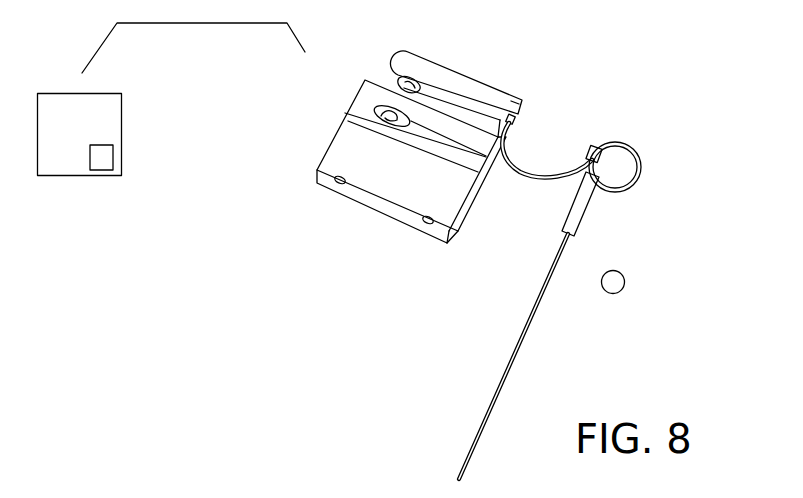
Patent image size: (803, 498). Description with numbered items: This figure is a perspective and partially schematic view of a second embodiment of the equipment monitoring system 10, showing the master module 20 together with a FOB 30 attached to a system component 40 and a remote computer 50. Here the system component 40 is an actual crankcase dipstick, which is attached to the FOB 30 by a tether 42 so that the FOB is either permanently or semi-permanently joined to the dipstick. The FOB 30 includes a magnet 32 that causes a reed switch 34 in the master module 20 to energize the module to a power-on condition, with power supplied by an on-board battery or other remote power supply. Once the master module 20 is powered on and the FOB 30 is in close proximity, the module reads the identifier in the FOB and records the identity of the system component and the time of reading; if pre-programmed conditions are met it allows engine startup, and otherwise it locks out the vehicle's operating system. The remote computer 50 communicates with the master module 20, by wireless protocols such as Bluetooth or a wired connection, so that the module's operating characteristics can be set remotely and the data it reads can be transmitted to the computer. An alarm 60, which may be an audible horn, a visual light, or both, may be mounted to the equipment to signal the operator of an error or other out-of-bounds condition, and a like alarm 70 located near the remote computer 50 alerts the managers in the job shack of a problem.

The equipment monitoring system 10 is at (660, 93).
The master module 20 is at (337, 132).
The FOB 30 is at (396, 54).
The magnet 32 is at (398, 80).
The reed switch 34 is at (363, 93).
The system component 40 is at (517, 347).
The tether 42 is at (543, 170).
The remote computer 50 is at (73, 177).
The alarm 60 is at (624, 287).
The alarm 70 is at (105, 162).